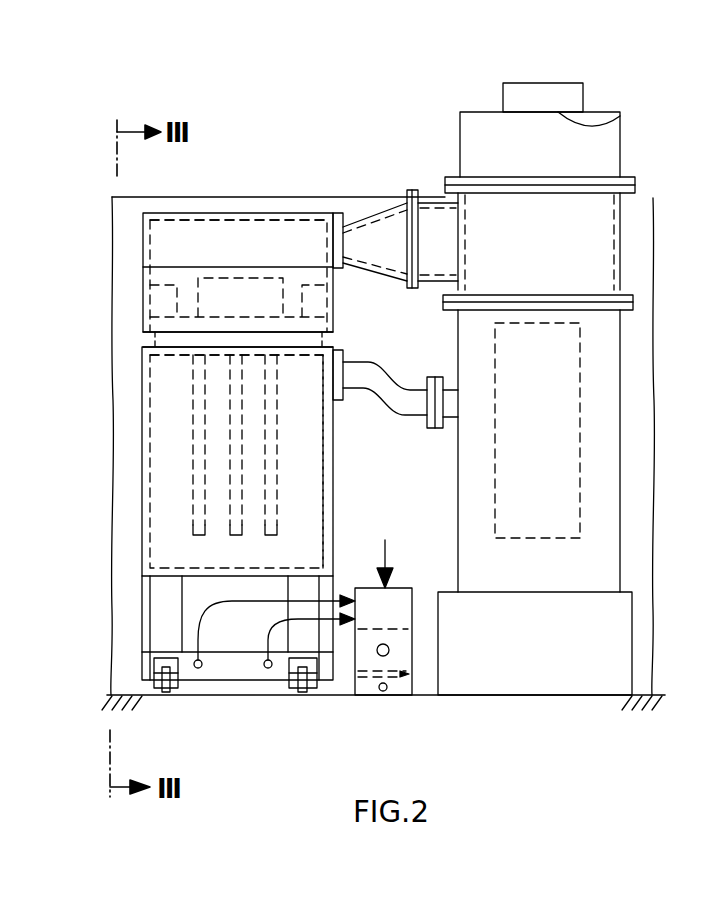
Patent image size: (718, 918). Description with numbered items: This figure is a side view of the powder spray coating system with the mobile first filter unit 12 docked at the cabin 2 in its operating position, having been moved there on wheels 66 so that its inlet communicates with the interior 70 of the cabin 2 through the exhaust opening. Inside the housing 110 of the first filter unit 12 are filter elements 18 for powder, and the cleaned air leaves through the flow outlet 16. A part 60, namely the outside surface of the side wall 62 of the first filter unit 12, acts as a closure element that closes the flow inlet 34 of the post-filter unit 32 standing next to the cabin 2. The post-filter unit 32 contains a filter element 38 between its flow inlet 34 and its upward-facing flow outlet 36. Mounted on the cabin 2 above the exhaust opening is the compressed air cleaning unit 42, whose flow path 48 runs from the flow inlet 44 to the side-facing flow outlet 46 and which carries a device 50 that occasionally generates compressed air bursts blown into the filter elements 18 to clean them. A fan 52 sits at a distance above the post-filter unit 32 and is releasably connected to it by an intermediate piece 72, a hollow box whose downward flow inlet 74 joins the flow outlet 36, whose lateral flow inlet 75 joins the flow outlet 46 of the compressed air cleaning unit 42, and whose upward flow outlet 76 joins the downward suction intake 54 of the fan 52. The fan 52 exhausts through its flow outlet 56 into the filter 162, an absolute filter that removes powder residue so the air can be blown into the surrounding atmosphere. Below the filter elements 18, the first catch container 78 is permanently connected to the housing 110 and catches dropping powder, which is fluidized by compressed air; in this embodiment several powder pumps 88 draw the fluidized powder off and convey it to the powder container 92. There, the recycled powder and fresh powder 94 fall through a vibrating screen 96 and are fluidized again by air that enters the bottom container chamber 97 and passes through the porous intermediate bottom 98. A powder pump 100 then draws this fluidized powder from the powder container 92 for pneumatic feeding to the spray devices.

The cabin 2 is at (128, 396).
The first filter unit 12 is at (160, 465).
The flow outlet 16 is at (170, 345).
The filter element 18 is at (268, 509).
The post-filter unit 32 is at (606, 479).
The flow inlet 34 is at (341, 400).
The flow outlet 36 is at (605, 312).
The filter element 38 is at (570, 435).
The compressed air cleaning unit 42 is at (160, 237).
The flow inlet 44 is at (316, 342).
The flow outlet 46 is at (332, 243).
The flow path 48 is at (250, 232).
The device for generation of compressed air bursts 50 is at (203, 285).
The fan 52 is at (605, 150).
The suction intake 54 is at (638, 181).
The flow outlet 56 is at (622, 118).
The part 60 is at (322, 374).
The side wall 62 is at (336, 478).
The wheels 66 is at (166, 692).
The interior 70 is at (127, 561).
The intermediate piece 72 is at (598, 252).
The flow inlet 74 is at (635, 305).
The flow inlet 75 is at (347, 235).
The flow outlet 76 is at (638, 193).
The first catch container 78 is at (198, 601).
The powder pump 88 is at (200, 670).
The powder container 92 is at (404, 697).
The fresh powder 94 is at (390, 555).
The vibrating screen 96 is at (395, 629).
The bottom container chamber 97 is at (368, 690).
The intermediate bottom 98 is at (410, 677).
The powder pump 100 is at (389, 648).
The housing 110 is at (292, 523).
The filter 162 is at (583, 98).